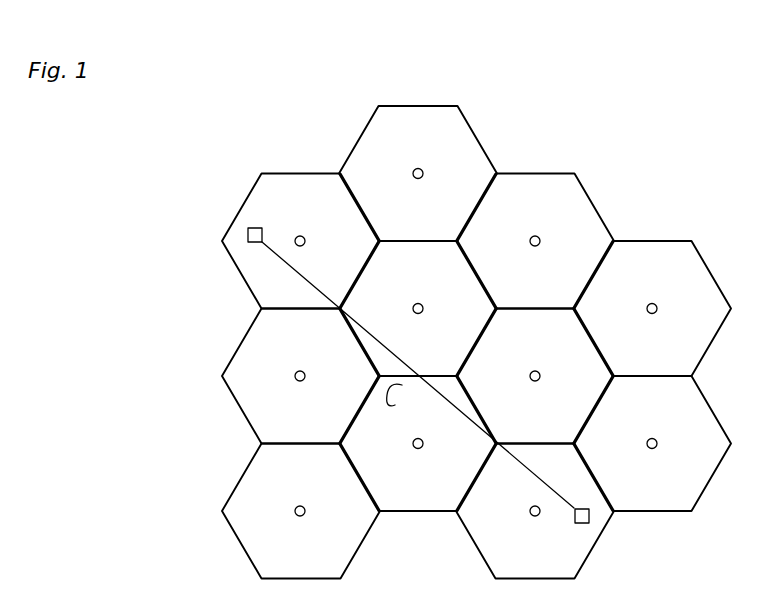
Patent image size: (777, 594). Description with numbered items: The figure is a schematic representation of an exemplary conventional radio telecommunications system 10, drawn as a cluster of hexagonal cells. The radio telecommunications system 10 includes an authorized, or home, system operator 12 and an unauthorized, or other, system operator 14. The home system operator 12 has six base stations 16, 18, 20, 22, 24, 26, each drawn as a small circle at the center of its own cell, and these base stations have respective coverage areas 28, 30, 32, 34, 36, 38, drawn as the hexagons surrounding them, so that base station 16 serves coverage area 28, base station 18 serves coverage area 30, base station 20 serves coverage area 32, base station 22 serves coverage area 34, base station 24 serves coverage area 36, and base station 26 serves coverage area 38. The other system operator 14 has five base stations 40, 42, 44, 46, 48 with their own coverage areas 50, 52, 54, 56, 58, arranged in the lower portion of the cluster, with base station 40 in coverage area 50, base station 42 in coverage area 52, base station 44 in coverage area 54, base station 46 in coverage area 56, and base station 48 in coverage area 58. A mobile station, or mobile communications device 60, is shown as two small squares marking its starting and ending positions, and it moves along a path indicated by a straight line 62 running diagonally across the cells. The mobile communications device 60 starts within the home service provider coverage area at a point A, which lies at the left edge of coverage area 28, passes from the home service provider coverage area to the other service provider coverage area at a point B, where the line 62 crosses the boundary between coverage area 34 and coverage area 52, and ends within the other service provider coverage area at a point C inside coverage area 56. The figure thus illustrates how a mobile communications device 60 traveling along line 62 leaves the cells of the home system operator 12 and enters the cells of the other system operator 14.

The radio telecommunications system 10 is at (628, 140).
The home system operator 12 is at (317, 143).
The other system operator 14 is at (644, 573).
The base station 16 is at (303, 232).
The base station 18 is at (421, 169).
The base station 20 is at (297, 372).
The base station 22 is at (415, 304).
The base station 24 is at (538, 236).
The base station 26 is at (654, 304).
The coverage area 28 is at (339, 277).
The coverage area 30 is at (450, 217).
The coverage area 32 is at (325, 427).
The coverage area 34 is at (452, 360).
The coverage area 36 is at (577, 290).
The coverage area 38 is at (684, 362).
The base station 40 is at (297, 506).
The base station 42 is at (414, 448).
The base station 44 is at (539, 372).
The base station 46 is at (531, 516).
The base station 48 is at (657, 439).
The coverage area 50 is at (337, 555).
The coverage area 52 is at (452, 497).
The coverage area 54 is at (577, 425).
The coverage area 56 is at (572, 560).
The coverage area 58 is at (684, 497).
The mobile communications device 60 is at (248, 228).
The line 62 is at (530, 473).